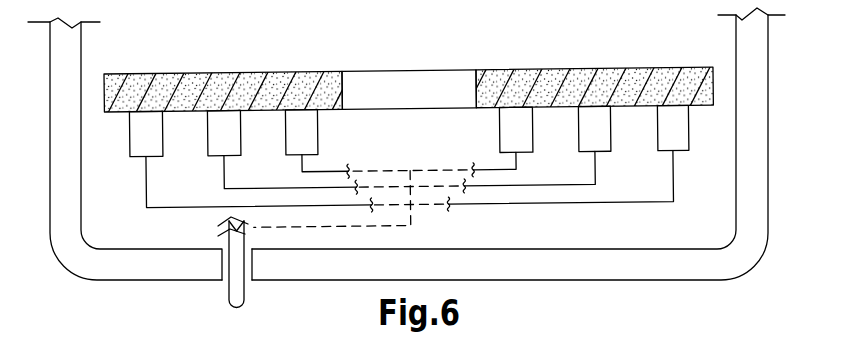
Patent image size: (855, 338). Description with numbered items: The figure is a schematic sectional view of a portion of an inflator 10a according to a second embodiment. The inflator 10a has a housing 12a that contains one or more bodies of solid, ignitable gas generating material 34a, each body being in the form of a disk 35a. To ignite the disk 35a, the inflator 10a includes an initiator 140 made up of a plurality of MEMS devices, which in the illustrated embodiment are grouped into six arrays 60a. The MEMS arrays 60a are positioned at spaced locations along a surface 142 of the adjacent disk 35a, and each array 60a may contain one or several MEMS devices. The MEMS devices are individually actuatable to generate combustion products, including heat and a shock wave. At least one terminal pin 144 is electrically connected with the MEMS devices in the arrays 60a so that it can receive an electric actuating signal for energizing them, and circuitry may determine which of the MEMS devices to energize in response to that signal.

The inflator 10a is at (772, 118).
The housing 12a is at (772, 65).
The gas generating material 34a is at (492, 71).
The disk 35a is at (534, 70).
The arrays of MEMS devices 60a is at (303, 130).
The initiator 140 is at (680, 199).
The surface 142 is at (328, 112).
The terminal pin 144 is at (245, 299).